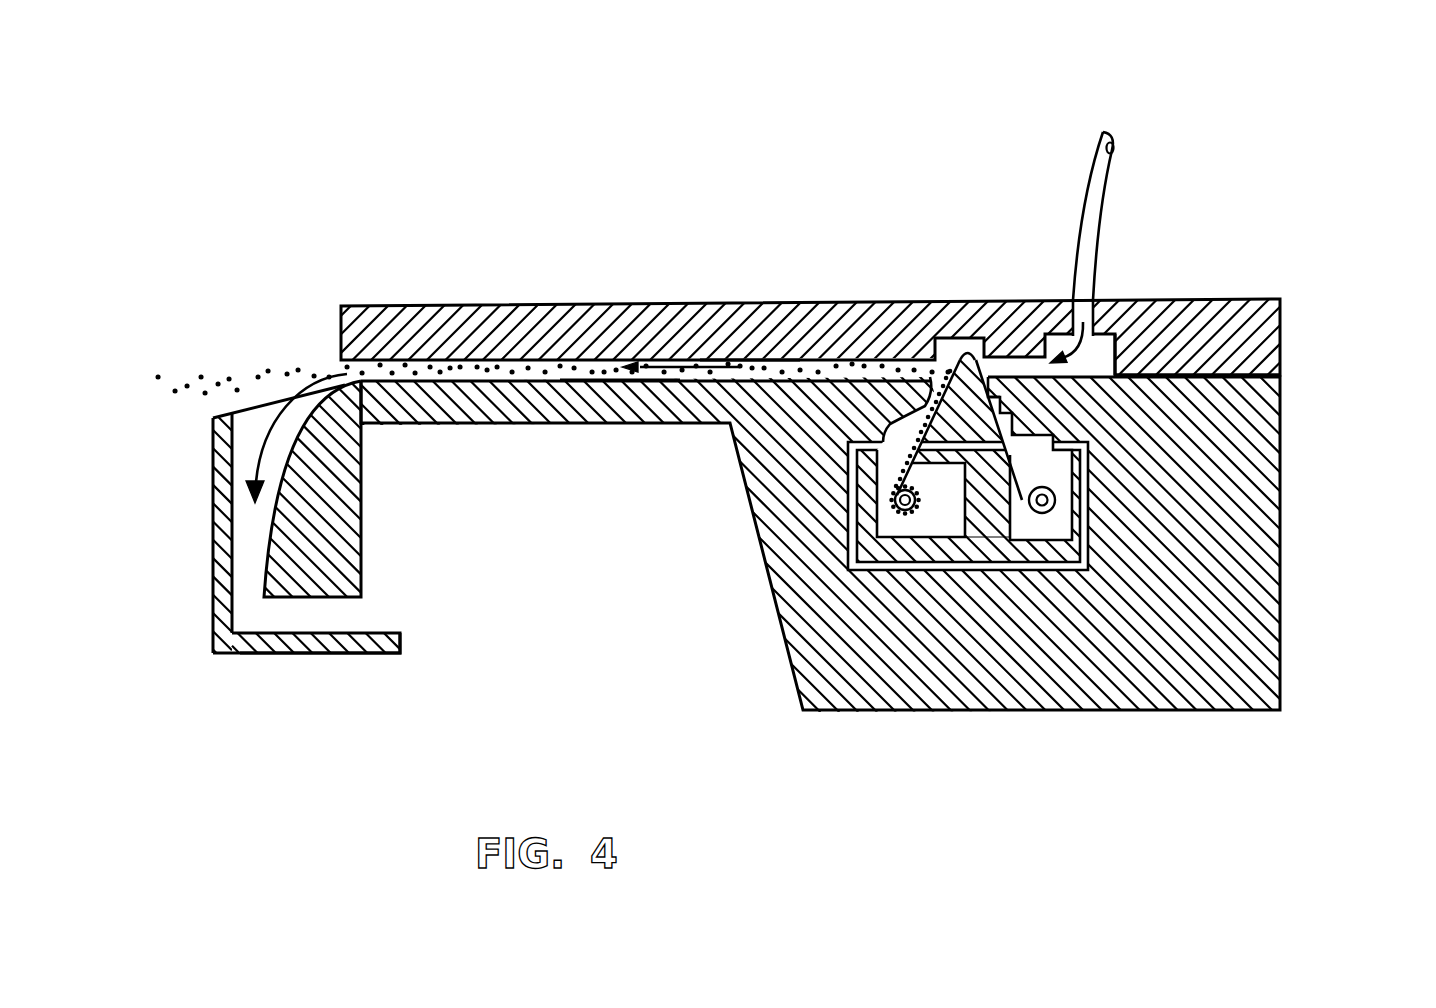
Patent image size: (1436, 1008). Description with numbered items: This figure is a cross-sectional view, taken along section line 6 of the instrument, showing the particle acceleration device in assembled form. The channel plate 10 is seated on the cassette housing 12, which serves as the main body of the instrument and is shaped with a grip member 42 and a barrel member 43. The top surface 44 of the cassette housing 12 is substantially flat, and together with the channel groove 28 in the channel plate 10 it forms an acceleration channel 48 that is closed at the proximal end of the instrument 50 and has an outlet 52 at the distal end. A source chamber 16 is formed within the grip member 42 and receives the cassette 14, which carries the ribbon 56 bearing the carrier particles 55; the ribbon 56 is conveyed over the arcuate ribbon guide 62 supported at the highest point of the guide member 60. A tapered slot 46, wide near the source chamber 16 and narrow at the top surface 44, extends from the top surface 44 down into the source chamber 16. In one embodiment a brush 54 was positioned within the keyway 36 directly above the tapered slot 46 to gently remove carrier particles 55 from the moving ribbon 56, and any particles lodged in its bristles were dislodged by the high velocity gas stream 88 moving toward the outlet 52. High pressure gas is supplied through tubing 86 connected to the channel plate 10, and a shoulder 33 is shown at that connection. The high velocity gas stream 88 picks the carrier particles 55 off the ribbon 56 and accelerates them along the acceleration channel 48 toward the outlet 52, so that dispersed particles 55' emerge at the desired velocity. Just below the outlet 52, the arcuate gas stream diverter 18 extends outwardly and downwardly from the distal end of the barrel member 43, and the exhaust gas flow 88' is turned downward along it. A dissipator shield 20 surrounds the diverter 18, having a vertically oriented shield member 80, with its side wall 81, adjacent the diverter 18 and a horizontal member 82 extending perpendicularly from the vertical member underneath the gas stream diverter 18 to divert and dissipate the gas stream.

The section line 6- 6 is at (565, 212).
The channel plate 10 is at (986, 277).
The cassette housing 12 is at (1306, 628).
The cassette 14 is at (1062, 462).
The source chamber 16 is at (1047, 562).
The arcuate gas stream diverter 18 is at (318, 515).
The dissipator shield 20 is at (355, 642).
The channel groove 28 is at (747, 360).
The shoulder 33 is at (1102, 347).
The keyway 36 is at (937, 340).
The grip member 42 is at (1217, 463).
The barrel member 43 is at (616, 405).
The top surface 44 is at (1230, 375).
The tapered slot 46 is at (997, 397).
The acceleration channel 48 is at (800, 370).
The proximal end of the instrument 50 is at (1280, 342).
The outlet 52 is at (337, 362).
The brush 54 is at (958, 350).
The carrier particles 55 is at (591, 273).
The dispersed particles 55' is at (215, 313).
The ribbon 56 is at (913, 462).
The guide member 60 is at (983, 523).
The arcuate ribbon guide 62 is at (963, 358).
The vertically oriented shield member 80 is at (222, 607).
The side wall 81 is at (220, 448).
The horizontal member 82 is at (262, 648).
The tubing 86 is at (1090, 207).
The high velocity gas stream 88 is at (1035, 291).
The exhaust air flow 88' is at (553, 345).